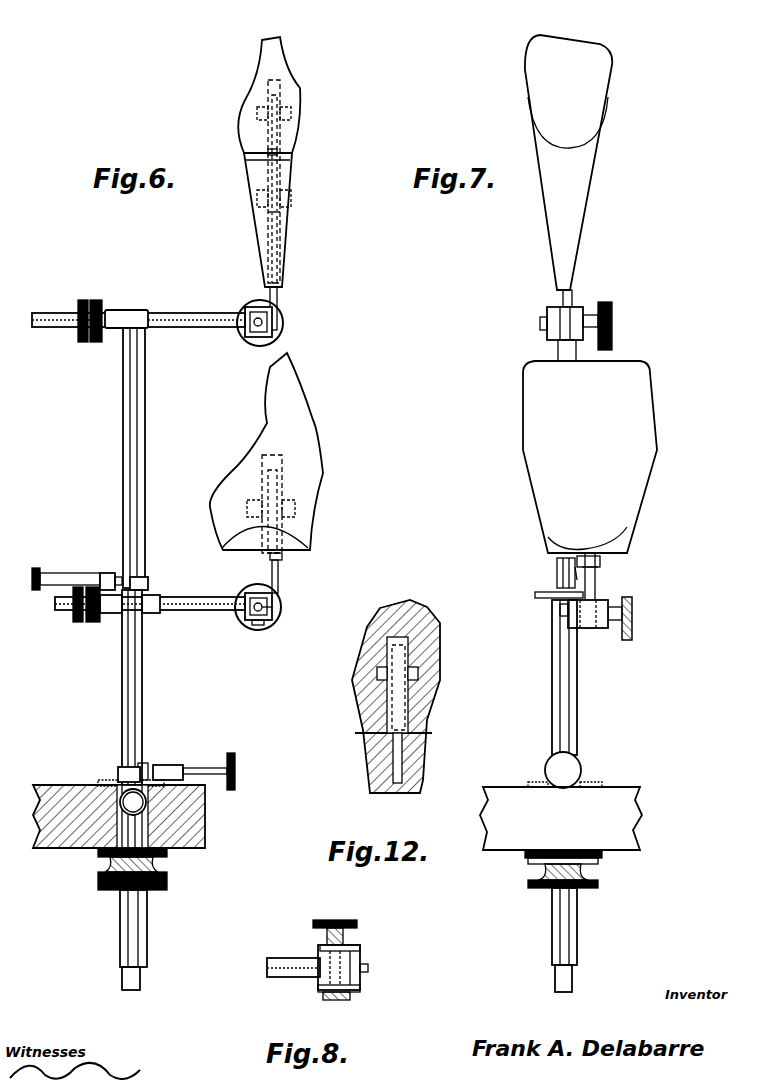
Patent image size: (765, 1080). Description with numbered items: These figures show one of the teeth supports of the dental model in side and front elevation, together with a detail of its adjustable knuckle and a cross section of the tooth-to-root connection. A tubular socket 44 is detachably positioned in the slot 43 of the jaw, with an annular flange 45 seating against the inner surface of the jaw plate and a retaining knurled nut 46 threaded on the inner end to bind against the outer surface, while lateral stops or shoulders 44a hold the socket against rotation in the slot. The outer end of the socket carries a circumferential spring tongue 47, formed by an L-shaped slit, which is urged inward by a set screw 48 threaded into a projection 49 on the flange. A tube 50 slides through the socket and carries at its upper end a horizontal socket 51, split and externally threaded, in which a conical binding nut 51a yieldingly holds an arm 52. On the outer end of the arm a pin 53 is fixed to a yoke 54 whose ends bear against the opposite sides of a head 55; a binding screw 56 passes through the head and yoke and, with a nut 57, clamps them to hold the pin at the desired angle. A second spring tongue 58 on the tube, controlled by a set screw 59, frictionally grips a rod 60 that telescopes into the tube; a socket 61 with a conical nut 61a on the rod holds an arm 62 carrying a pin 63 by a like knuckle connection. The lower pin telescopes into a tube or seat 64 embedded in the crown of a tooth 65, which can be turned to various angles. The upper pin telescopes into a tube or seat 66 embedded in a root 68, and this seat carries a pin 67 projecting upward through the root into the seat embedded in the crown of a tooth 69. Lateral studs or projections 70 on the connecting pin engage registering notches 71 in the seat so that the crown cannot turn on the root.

In FIG. 6, the slot 43 is at (117, 828).
In FIG. 6, the tubular socket 44 is at (150, 829).
In FIG. 6, the lateral stops or shoulders 44a is at (100, 782).
In FIG. 6, the annular flange 45 is at (118, 773).
In FIG. 7, the annular flange 45 is at (537, 786).
In FIG. 6, the retaining knurled nut 46 is at (160, 881).
In FIG. 7, the retaining knurled nut 46 is at (601, 883).
In FIG. 6, the circumferential spring tongue 47 is at (147, 763).
In FIG. 6, the set screw 48 is at (228, 756).
In FIG. 7, the set screw 48 is at (583, 769).
In FIG. 6, the projection 49 is at (161, 766).
In FIG. 6, the tube 50 is at (143, 689).
In FIG. 7, the tube 50 is at (579, 701).
In FIG. 6, the horizontal socket 51 is at (153, 614).
In FIG. 7, the horizontal socket 51 is at (630, 626).
In FIG. 6, the conical binding nut 51a is at (80, 623).
In FIG. 6, the arm 52 is at (231, 611).
In FIG. 8, the arm 52 is at (291, 957).
In FIG. 6, the pin 53 is at (279, 583).
In FIG. 7, the pin 53 is at (596, 591).
In FIG. 8, the pin 53 is at (369, 968).
In FIG. 6, the yoke 54 is at (263, 607).
In FIG. 7, the yoke 54 is at (600, 628).
In FIG. 8, the yoke 54 is at (361, 989).
In FIG. 8, the head 55 is at (356, 949).
In FIG. 6, the binding screw 56 is at (284, 323).
In FIG. 7, the binding screw 56 is at (546, 326).
In FIG. 8, the binding screw 56 is at (350, 921).
In FIG. 6, the nut 57 is at (259, 626).
In FIG. 7, the nut 57 is at (566, 621).
In FIG. 8, the nut 57 is at (350, 998).
In FIG. 6, the second spring tongue 58 is at (127, 577).
In FIG. 6, the set screw 59 is at (54, 573).
In FIG. 7, the set screw 59 is at (555, 581).
In FIG. 6, the rod 60 is at (141, 477).
In FIG. 7, the rod 60 is at (560, 571).
In FIG. 6, the socket 61 is at (133, 307).
In FIG. 6, the conical nut 61a is at (92, 312).
In FIG. 6, the arm 62 is at (193, 307).
In FIG. 6, the pin 63 is at (279, 297).
In FIG. 7, the pin 63 is at (576, 298).
In FIG. 6, the tube or seat 64 is at (282, 125).
In FIG. 7, the tube or seat 64 is at (600, 561).
In FIG. 12, the tube or seat 64 is at (410, 690).
In FIG. 6, the tooth 65 is at (322, 466).
In FIG. 7, the tooth 65 is at (590, 457).
In FIG. 6, the tube or seat 66 is at (278, 216).
In FIG. 6, the pin 67 is at (279, 173).
In FIG. 12, the pin 67 is at (424, 766).
In FIG. 6, the root 68 is at (290, 244).
In FIG. 7, the root 68 is at (585, 204).
In FIG. 12, the root 68 is at (422, 790).
In FIG. 6, the tooth 69 is at (291, 82).
In FIG. 7, the tooth 69 is at (568, 162).
In FIG. 12, the tooth 69 is at (425, 616).
In FIG. 6, the lateral studs or projections 70 is at (272, 153).
In FIG. 7, the lateral studs or projections 70 is at (577, 568).
In FIG. 12, the lateral studs or projections 70 is at (402, 729).
In FIG. 6, the notches 71 is at (268, 151).
In FIG. 7, the notches 71 is at (600, 565).
In FIG. 12, the notches 71 is at (405, 741).